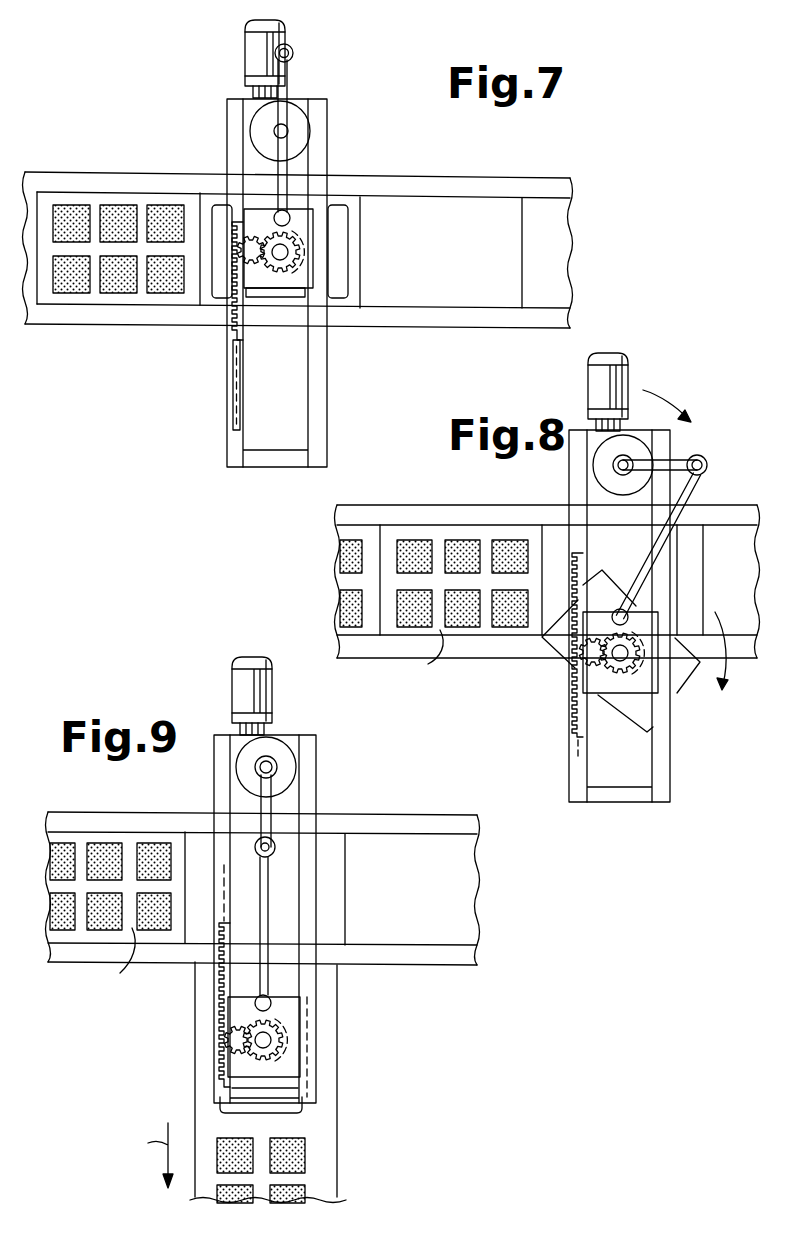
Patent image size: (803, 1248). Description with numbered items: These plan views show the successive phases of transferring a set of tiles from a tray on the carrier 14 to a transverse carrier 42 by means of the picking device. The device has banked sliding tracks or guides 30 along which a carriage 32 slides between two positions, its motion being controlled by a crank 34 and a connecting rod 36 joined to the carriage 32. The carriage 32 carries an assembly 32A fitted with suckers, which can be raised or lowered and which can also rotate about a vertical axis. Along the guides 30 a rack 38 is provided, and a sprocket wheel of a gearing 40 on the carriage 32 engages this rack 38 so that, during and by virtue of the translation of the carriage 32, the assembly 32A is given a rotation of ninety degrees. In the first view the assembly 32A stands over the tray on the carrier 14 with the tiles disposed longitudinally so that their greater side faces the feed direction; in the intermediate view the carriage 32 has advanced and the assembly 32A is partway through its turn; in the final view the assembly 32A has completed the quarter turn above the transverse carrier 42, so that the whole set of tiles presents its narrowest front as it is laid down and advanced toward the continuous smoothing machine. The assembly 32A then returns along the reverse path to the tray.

In FIG. 7, the carrier 14 is at (59, 333).
In FIG. 8, the carrier 14 is at (436, 500).
In FIG. 9, the carrier 14 is at (102, 806).
In FIG. 7, the sliding tracks or guides 30 is at (315, 430).
In FIG. 8, the sliding tracks or guides 30 is at (619, 577).
In FIG. 9, the sliding tracks or guides 30 is at (265, 880).
In FIG. 7, the carriage 32 is at (300, 283).
In FIG. 8, the carriage 32 is at (648, 678).
In FIG. 9, the carriage 32 is at (290, 1058).
In FIG. 7, the assembly 32A is at (348, 220).
In FIG. 8, the assembly 32A is at (620, 712).
In FIG. 9, the assembly 32A is at (305, 1116).
In FIG. 7, the crank 34 is at (280, 102).
In FIG. 8, the crank 34 is at (680, 450).
In FIG. 9, the crank 34 is at (270, 793).
In FIG. 7, the connecting rod 36 is at (282, 181).
In FIG. 8, the connecting rod 36 is at (698, 487).
In FIG. 9, the connecting rod 36 is at (270, 876).
In FIG. 7, the rack 38 is at (232, 383).
In FIG. 8, the rack 38 is at (577, 656).
In FIG. 9, the rack 38 is at (224, 976).
In FIG. 7, the gearing 40 is at (268, 268).
In FIG. 8, the gearing 40 is at (604, 666).
In FIG. 9, the gearing 40 is at (248, 1032).
In FIG. 9, the transverse carrier 42 is at (342, 1176).